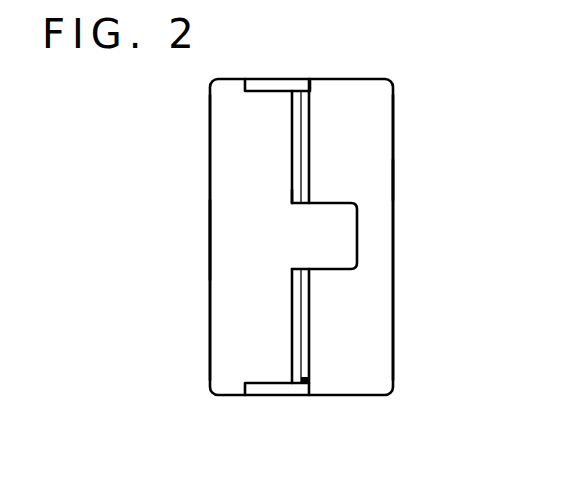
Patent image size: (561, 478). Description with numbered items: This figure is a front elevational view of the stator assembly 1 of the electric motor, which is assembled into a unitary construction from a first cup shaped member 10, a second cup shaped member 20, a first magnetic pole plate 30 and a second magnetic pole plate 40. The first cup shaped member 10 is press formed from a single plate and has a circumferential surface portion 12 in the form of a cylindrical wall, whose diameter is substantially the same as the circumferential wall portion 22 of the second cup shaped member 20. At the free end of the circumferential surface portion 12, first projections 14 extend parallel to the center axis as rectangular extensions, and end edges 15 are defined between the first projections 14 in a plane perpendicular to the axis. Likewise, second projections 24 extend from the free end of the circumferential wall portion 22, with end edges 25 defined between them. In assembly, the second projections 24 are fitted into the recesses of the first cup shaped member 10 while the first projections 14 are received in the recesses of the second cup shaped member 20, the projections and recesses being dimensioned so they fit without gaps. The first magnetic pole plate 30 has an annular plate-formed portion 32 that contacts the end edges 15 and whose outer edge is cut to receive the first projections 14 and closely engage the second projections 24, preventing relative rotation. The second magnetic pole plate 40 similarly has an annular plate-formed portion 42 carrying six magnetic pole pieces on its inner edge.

The stator assembly 1 is at (286, 74).
The first cup shaped member 10 is at (398, 142).
The circumferential surface portion 12 is at (388, 178).
The first projections 14 is at (253, 86).
The end edges 15 is at (309, 325).
The second cup shaped member 20 is at (207, 130).
The circumferential wall portion 22 is at (232, 235).
The second projections 24 is at (350, 238).
The end edges 25 is at (291, 191).
The first magnetic pole plate 30 is at (313, 136).
The plate-formed portion 32 is at (309, 90).
The second magnetic pole plate 40 is at (288, 338).
The plate-formed portion 42 is at (296, 383).